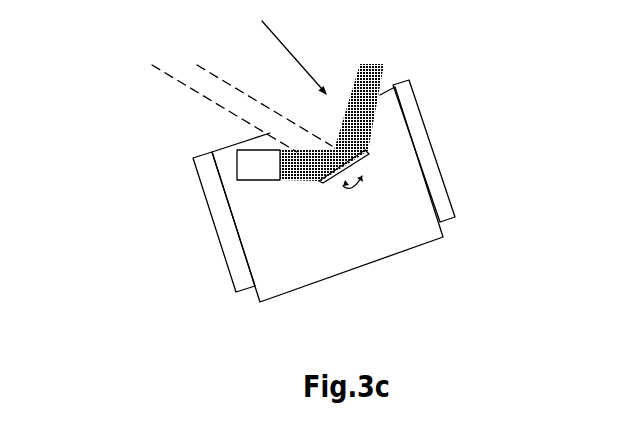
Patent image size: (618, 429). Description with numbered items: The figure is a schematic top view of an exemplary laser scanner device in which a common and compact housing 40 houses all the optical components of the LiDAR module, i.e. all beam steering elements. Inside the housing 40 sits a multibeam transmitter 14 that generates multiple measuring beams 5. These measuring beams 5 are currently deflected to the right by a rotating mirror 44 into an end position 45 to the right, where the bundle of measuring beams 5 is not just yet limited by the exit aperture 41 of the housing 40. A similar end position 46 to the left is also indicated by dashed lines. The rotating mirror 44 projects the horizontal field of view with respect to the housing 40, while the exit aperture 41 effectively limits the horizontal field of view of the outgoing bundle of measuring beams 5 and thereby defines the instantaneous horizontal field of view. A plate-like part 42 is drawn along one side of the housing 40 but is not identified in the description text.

The common housing 40 is at (478, 282).
The side plate 42 is at (430, 165).
The measuring beams 5 is at (416, 91).
The end position to the right 45 is at (380, 75).
The multibeam transmitter 14 is at (252, 165).
The rotating mirror 44 is at (342, 175).
The end position to the left 46 is at (180, 85).
The exit aperture 41 is at (262, 21).